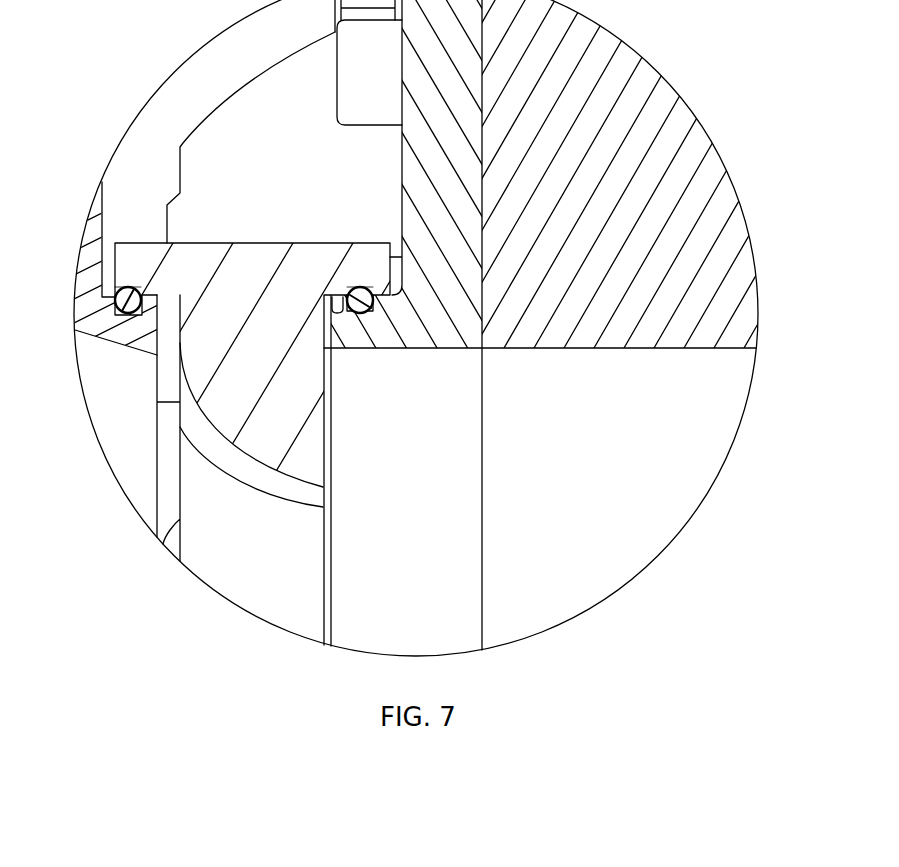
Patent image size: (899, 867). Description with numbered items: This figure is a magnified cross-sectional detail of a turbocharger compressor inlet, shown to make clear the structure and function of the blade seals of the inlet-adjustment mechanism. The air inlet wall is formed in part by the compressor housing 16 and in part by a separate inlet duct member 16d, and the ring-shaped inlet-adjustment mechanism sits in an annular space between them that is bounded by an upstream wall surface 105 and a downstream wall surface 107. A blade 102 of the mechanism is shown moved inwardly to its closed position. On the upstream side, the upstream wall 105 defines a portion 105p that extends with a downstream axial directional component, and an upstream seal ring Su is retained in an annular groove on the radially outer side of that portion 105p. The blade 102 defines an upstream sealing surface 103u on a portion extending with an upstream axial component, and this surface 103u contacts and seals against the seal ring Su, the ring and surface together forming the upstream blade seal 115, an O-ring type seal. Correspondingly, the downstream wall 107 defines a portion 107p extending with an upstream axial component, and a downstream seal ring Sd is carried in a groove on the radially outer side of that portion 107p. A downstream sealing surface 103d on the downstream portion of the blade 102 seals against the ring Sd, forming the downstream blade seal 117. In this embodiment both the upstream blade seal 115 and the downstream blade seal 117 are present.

The compressor housing 16 is at (585, 340).
The inlet duct member 16d is at (87, 283).
The blade 102 is at (290, 382).
The upstream sealing surface 103u is at (165, 305).
The downstream sealing surface 103d is at (347, 296).
The upstream wall surface 105 is at (103, 230).
The portion of upstream wall 105p is at (120, 335).
The downstream wall surface 107 is at (401, 199).
The portion of downstream wall 107p is at (353, 343).
The upstream blade seal 115 is at (106, 283).
The downstream blade seal 117 is at (385, 316).
The upstream seal ring Su is at (129, 287).
The downstream seal ring Sd is at (361, 288).